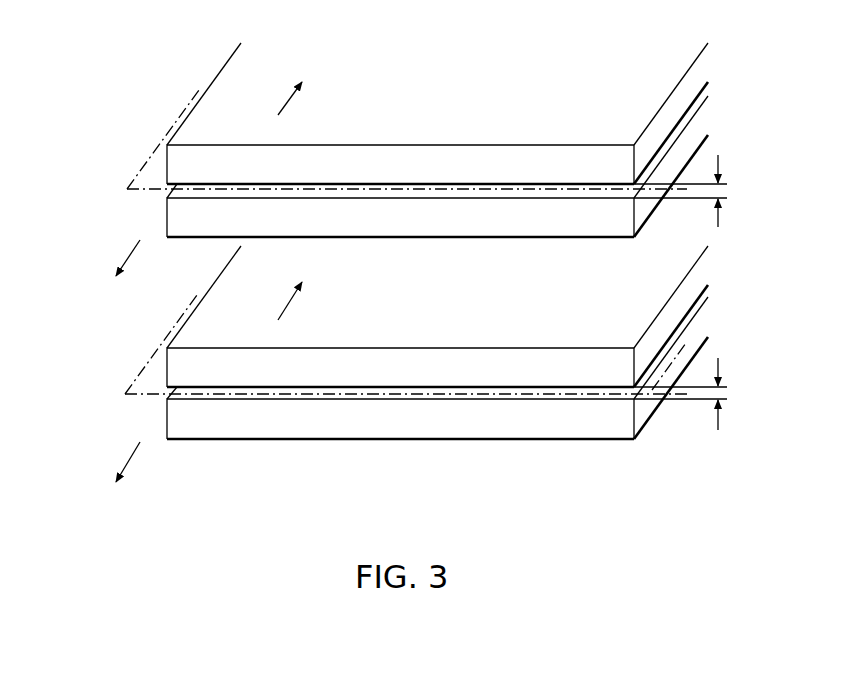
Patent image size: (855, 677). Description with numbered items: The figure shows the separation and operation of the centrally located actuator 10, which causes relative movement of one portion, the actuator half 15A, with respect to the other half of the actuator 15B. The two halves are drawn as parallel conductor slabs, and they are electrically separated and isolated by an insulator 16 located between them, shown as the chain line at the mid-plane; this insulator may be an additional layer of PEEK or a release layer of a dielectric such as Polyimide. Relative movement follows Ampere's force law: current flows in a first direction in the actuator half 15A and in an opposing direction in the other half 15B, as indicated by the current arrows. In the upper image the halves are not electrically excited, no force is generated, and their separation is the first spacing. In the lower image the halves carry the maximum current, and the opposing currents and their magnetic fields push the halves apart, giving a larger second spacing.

The actuator 10 is at (121, 131).
The actuator half 15A is at (655, 140).
The other half of the actuator 15B is at (593, 237).
The insulator 16 is at (126, 189).